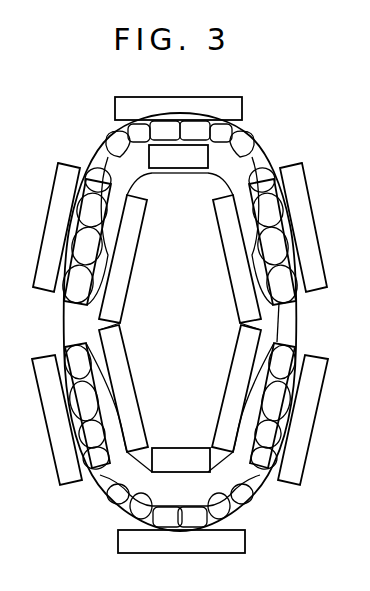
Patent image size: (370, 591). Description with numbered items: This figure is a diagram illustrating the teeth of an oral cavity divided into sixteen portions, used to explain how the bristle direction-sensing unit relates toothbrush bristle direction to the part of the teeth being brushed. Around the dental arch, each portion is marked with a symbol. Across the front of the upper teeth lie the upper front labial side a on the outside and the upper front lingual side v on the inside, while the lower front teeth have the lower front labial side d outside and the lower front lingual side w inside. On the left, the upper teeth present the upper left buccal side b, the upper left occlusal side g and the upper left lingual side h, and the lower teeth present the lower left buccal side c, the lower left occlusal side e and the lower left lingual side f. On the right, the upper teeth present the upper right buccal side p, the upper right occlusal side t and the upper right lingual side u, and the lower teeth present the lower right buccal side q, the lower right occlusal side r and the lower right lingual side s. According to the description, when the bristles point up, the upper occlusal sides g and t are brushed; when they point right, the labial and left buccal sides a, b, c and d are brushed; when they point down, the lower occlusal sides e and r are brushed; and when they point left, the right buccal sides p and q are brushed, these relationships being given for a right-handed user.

The upper front labial side a is at (178, 108).
The upper left buccal side b is at (56, 227).
The lower left buccal side c is at (57, 420).
The lower front labial side d is at (181, 541).
The lower left occlusal side e is at (87, 405).
The lower left lingual side f is at (123, 388).
The upper left occlusal side g is at (87, 242).
The upper left lingual side h is at (123, 259).
The upper right buccal side p is at (303, 227).
The lower right buccal side q is at (303, 420).
The lower right occlusal side r is at (272, 405).
The lower right lingual side s is at (236, 388).
The upper right occlusal side t is at (272, 242).
The upper right lingual side u is at (237, 259).
The upper front lingual side v is at (178, 156).
The lower front lingual side w is at (181, 460).